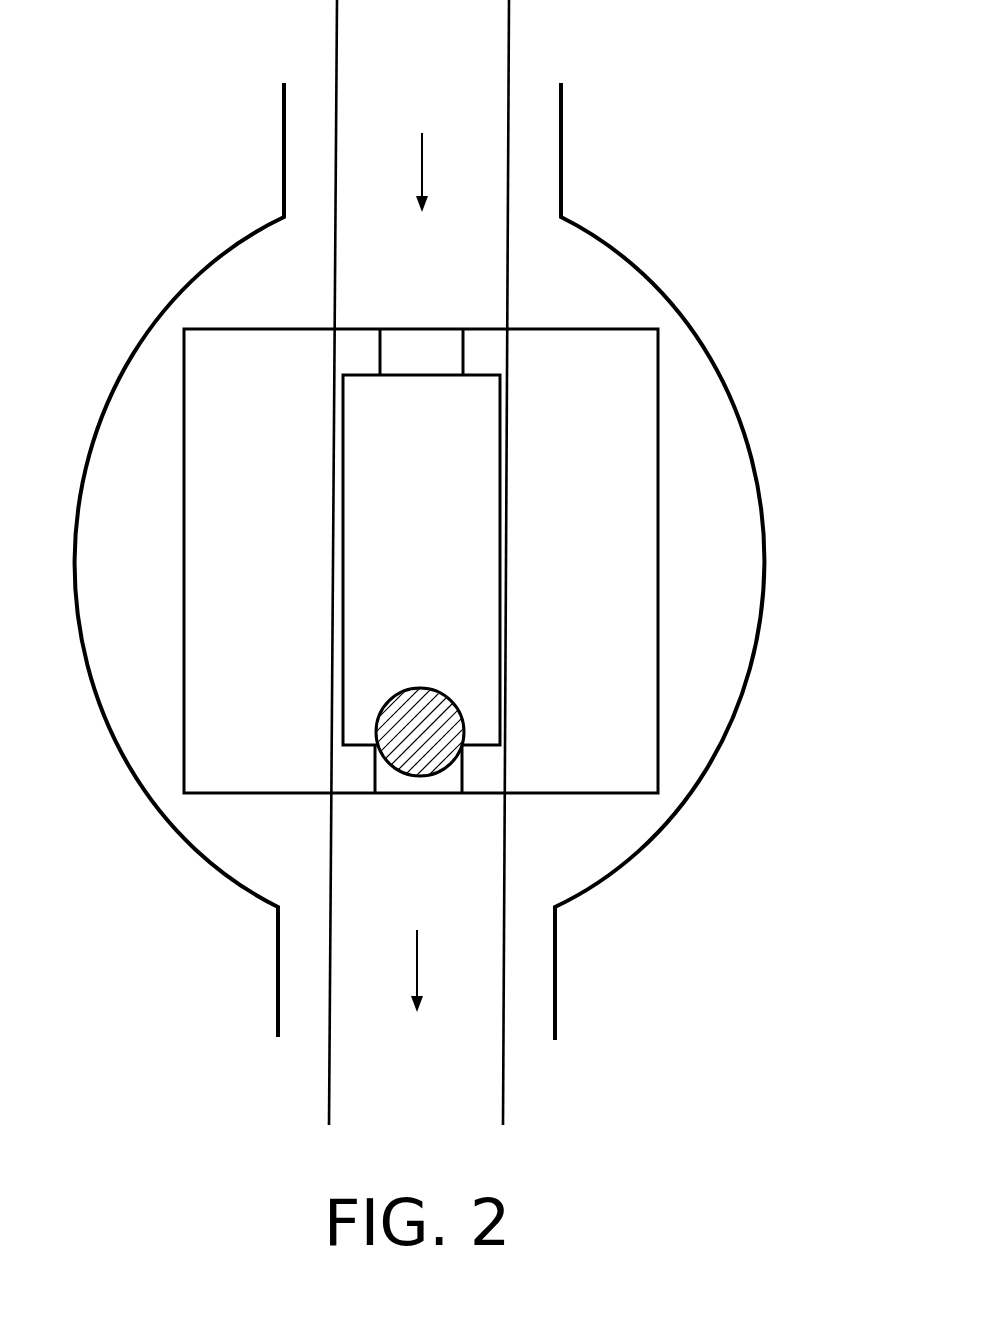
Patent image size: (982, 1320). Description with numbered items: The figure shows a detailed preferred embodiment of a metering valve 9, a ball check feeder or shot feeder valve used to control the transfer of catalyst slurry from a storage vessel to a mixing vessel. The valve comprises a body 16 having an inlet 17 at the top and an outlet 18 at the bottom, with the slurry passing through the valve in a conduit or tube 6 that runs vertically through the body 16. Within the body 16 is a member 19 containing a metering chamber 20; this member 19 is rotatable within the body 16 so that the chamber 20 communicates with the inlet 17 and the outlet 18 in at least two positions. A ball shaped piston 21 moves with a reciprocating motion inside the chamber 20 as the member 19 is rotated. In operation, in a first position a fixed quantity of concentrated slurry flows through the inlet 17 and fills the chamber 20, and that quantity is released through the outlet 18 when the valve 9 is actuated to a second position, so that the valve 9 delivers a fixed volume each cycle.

The tube / conduit 6 is at (489, 196).
The metering valve 9 is at (128, 842).
The body 16 is at (743, 615).
The inlet 17 is at (423, 153).
The outlet 18 is at (417, 954).
The member 19 is at (606, 573).
The metering chamber 20 is at (440, 463).
The ball shaped piston 21 is at (422, 689).